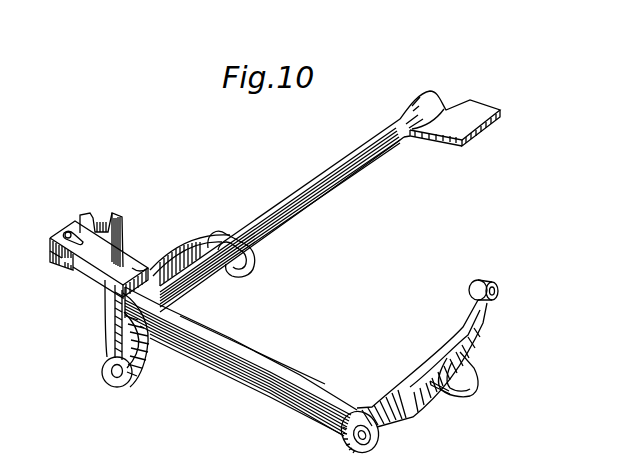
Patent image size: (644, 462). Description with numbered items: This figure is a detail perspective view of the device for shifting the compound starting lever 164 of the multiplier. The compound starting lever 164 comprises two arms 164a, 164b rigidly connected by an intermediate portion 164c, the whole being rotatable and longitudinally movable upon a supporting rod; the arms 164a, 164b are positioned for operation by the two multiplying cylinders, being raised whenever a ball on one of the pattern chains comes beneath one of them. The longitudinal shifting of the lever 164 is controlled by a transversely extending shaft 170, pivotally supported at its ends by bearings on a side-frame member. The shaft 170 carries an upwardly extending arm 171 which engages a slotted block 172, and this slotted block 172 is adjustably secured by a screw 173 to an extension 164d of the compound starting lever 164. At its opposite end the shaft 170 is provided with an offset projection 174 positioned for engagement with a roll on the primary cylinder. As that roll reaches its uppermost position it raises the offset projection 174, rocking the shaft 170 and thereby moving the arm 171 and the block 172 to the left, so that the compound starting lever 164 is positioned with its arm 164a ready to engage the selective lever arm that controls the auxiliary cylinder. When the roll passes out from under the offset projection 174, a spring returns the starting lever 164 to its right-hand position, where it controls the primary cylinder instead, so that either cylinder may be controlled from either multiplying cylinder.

The compound starting lever 164 is at (243, 379).
The arm 164a is at (440, 346).
The arm 164b is at (254, 264).
The intermediate portion 164c is at (262, 354).
The extension 164d is at (110, 268).
The shaft 170 is at (338, 187).
The arm 171 is at (118, 230).
The slotted block 172 is at (58, 264).
The screw 173 is at (65, 235).
The offset projection 174 is at (491, 107).